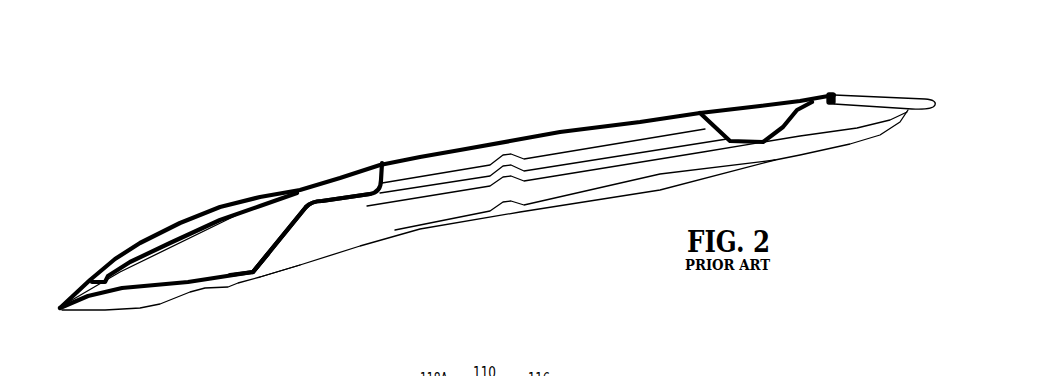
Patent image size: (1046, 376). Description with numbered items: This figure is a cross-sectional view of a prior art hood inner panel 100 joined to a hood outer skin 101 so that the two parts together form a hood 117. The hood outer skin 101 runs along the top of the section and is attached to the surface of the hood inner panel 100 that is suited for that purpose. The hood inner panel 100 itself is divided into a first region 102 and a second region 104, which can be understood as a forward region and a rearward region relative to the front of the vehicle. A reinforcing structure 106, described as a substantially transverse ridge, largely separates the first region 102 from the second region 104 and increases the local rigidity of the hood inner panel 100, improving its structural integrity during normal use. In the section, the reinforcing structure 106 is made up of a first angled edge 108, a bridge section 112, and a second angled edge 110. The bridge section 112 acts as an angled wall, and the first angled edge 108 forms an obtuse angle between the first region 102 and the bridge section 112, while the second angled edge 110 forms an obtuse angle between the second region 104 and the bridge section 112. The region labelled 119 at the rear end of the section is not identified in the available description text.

The hood inner panel 100 is at (155, 282).
The hood outer skin 101 is at (383, 163).
The first region 102 is at (193, 292).
The second region 104 is at (387, 210).
The reinforcing structure 106 is at (283, 253).
The first angled edge 108 is at (260, 274).
The second angled edge 110 is at (315, 207).
The bridge section 112 is at (298, 208).
The hood 117 is at (59, 305).
The rear end portion with notch 119 is at (806, 175).